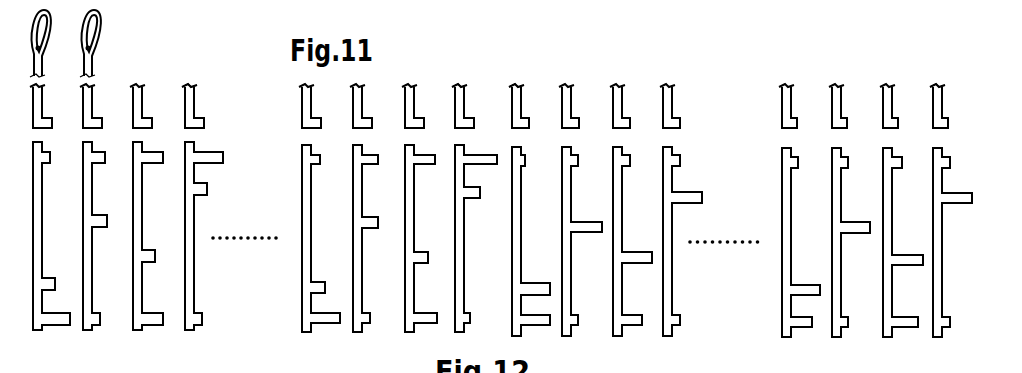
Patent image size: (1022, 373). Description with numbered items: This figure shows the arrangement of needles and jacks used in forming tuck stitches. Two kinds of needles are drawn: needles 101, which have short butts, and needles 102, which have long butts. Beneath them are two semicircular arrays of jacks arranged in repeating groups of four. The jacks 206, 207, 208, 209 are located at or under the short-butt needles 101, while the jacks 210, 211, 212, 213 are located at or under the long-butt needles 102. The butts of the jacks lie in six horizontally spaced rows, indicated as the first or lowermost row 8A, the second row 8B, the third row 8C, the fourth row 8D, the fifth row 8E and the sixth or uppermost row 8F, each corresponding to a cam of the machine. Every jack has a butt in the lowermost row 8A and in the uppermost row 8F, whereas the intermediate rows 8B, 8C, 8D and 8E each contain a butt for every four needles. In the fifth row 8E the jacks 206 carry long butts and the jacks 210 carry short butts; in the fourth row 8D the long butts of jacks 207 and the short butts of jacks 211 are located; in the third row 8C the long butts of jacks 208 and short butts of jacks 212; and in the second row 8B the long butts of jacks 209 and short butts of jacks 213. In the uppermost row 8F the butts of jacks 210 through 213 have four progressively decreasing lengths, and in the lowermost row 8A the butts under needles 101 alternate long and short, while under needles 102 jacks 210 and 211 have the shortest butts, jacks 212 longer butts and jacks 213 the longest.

The needles having short butts 101 is at (941, 97).
The needles having long butts 102 is at (455, 96).
The jack 206 is at (930, 351).
The jack 207 is at (825, 351).
The jack 208 is at (877, 351).
The jack 209 is at (775, 351).
The jack 210 is at (430, 352).
The jack 211 is at (325, 349).
The jack 212 is at (378, 351).
The jack 213 is at (285, 349).
The first or lowermost row of butts 8A is at (950, 317).
The second row of butts 8B is at (820, 285).
The third row of butts 8C is at (923, 255).
The fourth row of butts 8D is at (870, 222).
The fifth row of butts 8E is at (972, 193).
The sixth or uppermost row of butts 8F is at (950, 157).